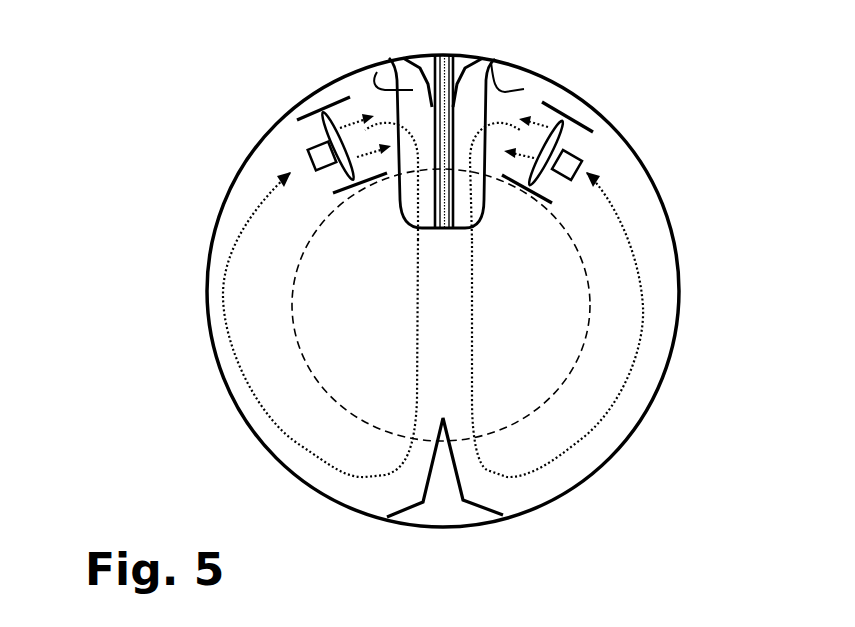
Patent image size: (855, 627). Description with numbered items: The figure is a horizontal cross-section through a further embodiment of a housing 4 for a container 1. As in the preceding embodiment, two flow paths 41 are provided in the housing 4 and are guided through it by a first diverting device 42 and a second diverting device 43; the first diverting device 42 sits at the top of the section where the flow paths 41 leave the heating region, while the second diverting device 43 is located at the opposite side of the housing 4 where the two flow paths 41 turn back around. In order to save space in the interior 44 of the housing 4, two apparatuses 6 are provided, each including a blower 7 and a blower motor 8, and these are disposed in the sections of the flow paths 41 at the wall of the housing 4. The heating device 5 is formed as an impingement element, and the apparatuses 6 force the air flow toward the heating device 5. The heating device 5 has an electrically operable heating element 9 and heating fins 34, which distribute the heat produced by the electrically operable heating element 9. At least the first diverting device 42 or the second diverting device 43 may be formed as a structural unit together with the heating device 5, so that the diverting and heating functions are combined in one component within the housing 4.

The container 1 is at (134, 148).
The housing 4 is at (677, 228).
The heating device 5 is at (513, 87).
The apparatuses 6 is at (332, 97).
The blower 7 is at (292, 138).
The blower motor 8 is at (310, 158).
The electrically operable heating element 9 is at (430, 60).
The heating fins 34 is at (377, 72).
The flow paths 41 is at (225, 318).
The first diverting device 42 is at (462, 63).
The second diverting device 43 is at (462, 500).
The interior 44 is at (568, 375).